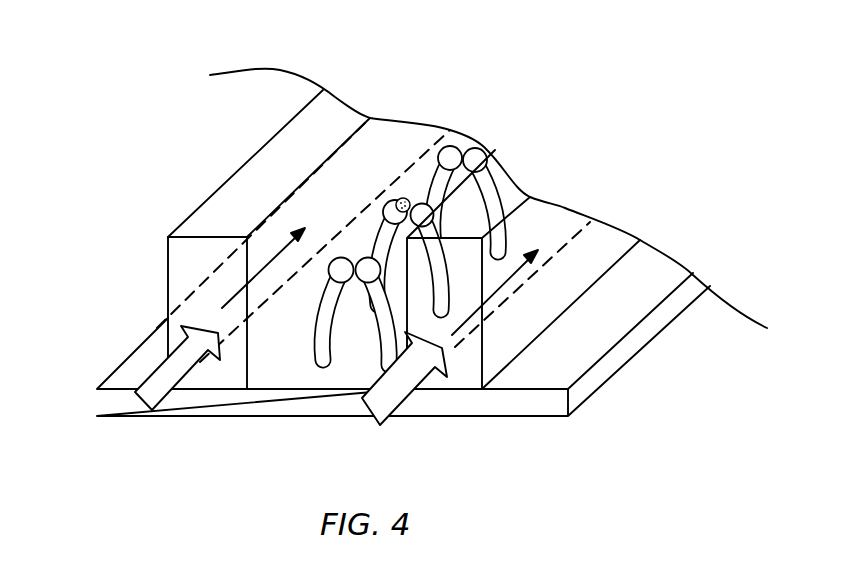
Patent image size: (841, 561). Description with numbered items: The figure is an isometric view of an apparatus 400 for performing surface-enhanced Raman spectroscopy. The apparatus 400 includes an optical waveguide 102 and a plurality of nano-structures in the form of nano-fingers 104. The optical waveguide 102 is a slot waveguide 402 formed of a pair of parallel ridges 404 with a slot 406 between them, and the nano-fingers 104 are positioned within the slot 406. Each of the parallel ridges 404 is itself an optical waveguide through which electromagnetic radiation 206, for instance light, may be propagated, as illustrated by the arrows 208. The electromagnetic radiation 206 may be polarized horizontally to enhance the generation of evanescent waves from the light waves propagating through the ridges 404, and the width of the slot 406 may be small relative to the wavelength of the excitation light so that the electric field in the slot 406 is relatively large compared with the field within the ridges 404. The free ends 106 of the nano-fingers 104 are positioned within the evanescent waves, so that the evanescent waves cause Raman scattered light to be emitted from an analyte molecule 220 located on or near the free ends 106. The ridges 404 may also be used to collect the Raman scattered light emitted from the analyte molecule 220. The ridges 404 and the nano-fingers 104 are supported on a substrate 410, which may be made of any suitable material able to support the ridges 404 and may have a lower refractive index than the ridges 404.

The apparatus 400 is at (134, 44).
The optical waveguide 102 is at (224, 124).
The slot waveguide 402 is at (197, 182).
The parallel ridges 404 is at (185, 219).
The arrows 208 is at (250, 283).
The analyte molecule 220 is at (402, 198).
The free ends 106 is at (456, 148).
The nano-fingers 104 is at (497, 178).
The electromagnetic radiation 206 is at (173, 393).
The substrate 410 is at (265, 416).
The slot 406 is at (343, 392).